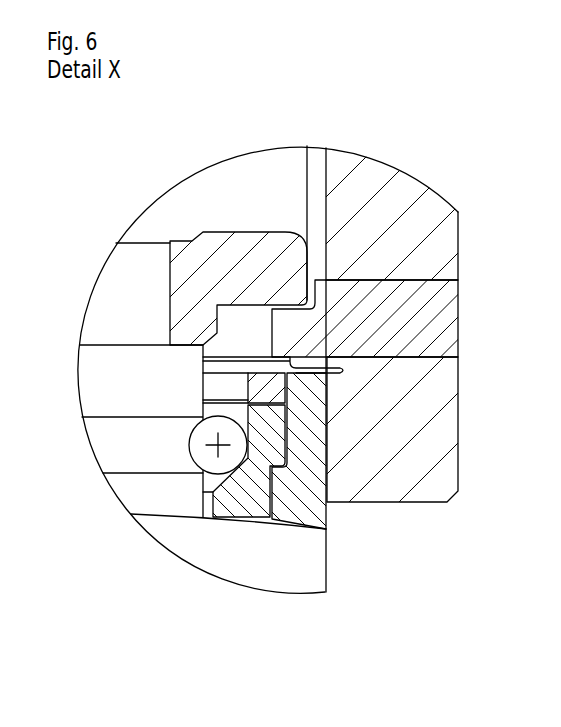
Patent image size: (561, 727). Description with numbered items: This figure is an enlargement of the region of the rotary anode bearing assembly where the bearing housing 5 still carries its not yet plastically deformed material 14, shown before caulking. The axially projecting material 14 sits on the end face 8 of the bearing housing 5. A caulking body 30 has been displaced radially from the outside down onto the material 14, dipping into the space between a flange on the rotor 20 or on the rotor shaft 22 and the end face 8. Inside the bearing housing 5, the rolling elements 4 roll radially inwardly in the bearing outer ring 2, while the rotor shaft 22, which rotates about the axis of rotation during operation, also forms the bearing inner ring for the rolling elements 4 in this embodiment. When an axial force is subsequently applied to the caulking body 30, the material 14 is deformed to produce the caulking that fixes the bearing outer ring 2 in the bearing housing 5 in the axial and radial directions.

The bearing outer ring 2 is at (240, 495).
The rolling elements 4 is at (210, 455).
The bearing housing 5 is at (303, 513).
The end face 8 is at (330, 369).
The material 14 is at (293, 355).
The rotor 20 is at (250, 275).
The rotor shaft 22 is at (140, 497).
The caulking body 30 is at (368, 307).